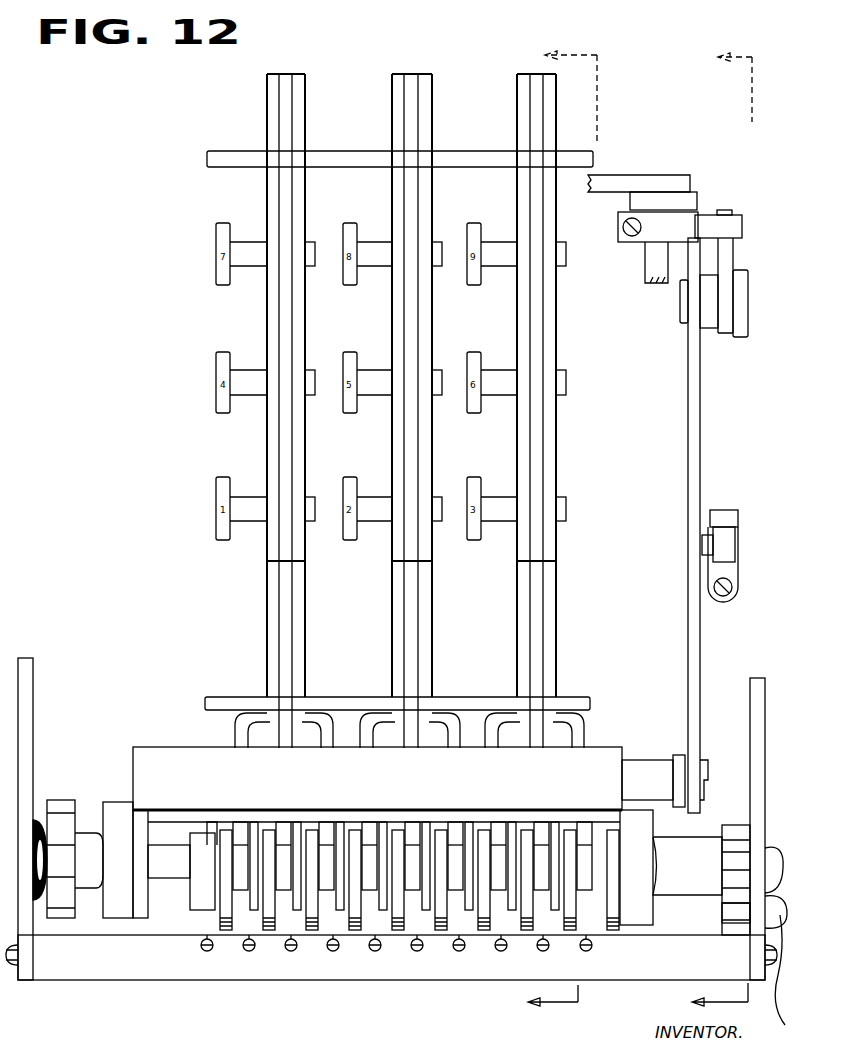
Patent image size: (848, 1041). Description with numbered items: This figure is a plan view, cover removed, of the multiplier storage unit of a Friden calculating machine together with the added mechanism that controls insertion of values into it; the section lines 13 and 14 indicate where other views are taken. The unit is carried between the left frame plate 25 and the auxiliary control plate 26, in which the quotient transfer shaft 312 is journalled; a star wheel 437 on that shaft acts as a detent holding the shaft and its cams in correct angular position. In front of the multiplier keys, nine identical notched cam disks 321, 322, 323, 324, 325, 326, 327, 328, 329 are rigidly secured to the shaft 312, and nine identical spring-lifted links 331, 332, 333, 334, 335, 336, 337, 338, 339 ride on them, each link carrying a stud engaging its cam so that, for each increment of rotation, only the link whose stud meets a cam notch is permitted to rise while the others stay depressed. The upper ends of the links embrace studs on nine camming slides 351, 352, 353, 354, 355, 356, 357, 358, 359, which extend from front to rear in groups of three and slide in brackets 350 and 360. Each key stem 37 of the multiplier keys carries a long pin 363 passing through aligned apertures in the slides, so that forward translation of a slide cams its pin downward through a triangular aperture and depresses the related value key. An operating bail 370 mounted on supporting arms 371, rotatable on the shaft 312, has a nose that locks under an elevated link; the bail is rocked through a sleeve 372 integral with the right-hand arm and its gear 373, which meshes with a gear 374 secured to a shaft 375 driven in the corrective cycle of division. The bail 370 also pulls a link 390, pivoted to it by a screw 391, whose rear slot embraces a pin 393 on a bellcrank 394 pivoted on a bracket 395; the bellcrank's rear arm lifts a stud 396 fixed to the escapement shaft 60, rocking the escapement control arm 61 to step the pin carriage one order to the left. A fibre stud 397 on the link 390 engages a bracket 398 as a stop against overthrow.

The section line 13 is at (740, 529).
The section line 14 is at (581, 529).
The left frame plate 25 is at (750, 722).
The auxiliary control plate 26 is at (34, 700).
The key stem 37 is at (216, 511).
The shaft 60 is at (660, 264).
The escapement control arm 61 is at (641, 192).
The shaft 312 is at (775, 848).
The cam disk 321 is at (212, 873).
The cam disk 322 is at (340, 930).
The cam disk 323 is at (469, 930).
The cam disk 324 is at (254, 930).
The cam disk 325 is at (383, 930).
The cam disk 326 is at (512, 930).
The cam disk 327 is at (297, 930).
The cam disk 328 is at (426, 930).
The cam disk 329 is at (555, 930).
The link 331 is at (228, 935).
The link 332 is at (356, 935).
The link 333 is at (484, 935).
The link 334 is at (270, 935).
The link 335 is at (399, 935).
The link 336 is at (527, 935).
The link 337 is at (313, 935).
The link 338 is at (442, 935).
The link 339 is at (570, 935).
The bracket 350 is at (580, 697).
The camming slide 351 is at (276, 411).
The camming slide 352 is at (407, 411).
The camming slide 353 is at (527, 411).
The camming slide 354 is at (279, 585).
The camming slide 355 is at (404, 585).
The camming slide 356 is at (530, 585).
The camming slide 357 is at (292, 648).
The camming slide 358 is at (425, 648).
The camming slide 359 is at (548, 648).
The bracket 360 is at (585, 160).
The pin 363 is at (566, 385).
The operating bail 370 is at (588, 757).
The supporting arm 371 is at (630, 842).
The sleeve 372 is at (687, 866).
The gear 373 is at (736, 825).
The gear 374 is at (737, 923).
The shaft 375 is at (762, 974).
The link 390 is at (688, 403).
The screw 391 is at (655, 770).
The pin 393 is at (680, 311).
The bellcrank 394 is at (725, 335).
The bracket 395 is at (748, 326).
The stud 396 is at (705, 220).
The fibre stud 397 is at (724, 545).
The bracket 398 is at (721, 511).
The star wheel 437 is at (63, 800).